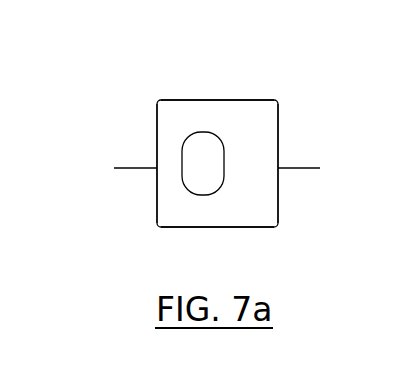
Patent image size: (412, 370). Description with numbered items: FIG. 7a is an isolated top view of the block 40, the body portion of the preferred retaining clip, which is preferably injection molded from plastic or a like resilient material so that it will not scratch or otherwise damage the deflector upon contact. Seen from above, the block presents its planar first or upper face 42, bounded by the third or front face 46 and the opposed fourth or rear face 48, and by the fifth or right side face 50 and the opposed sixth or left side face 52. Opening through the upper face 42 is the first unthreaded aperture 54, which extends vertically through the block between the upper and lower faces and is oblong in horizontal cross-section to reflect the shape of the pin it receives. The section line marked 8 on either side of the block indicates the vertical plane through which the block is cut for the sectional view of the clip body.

The block 40 is at (227, 152).
The first or upper face 42 is at (255, 105).
The third or front face 46 is at (156, 221).
The fourth or rear face 48 is at (280, 221).
The fifth or right side face 50 is at (207, 100).
The sixth or left side face 52 is at (207, 228).
The first unthreaded aperture 54 is at (191, 147).
The section line 8- 8 is at (114, 168).